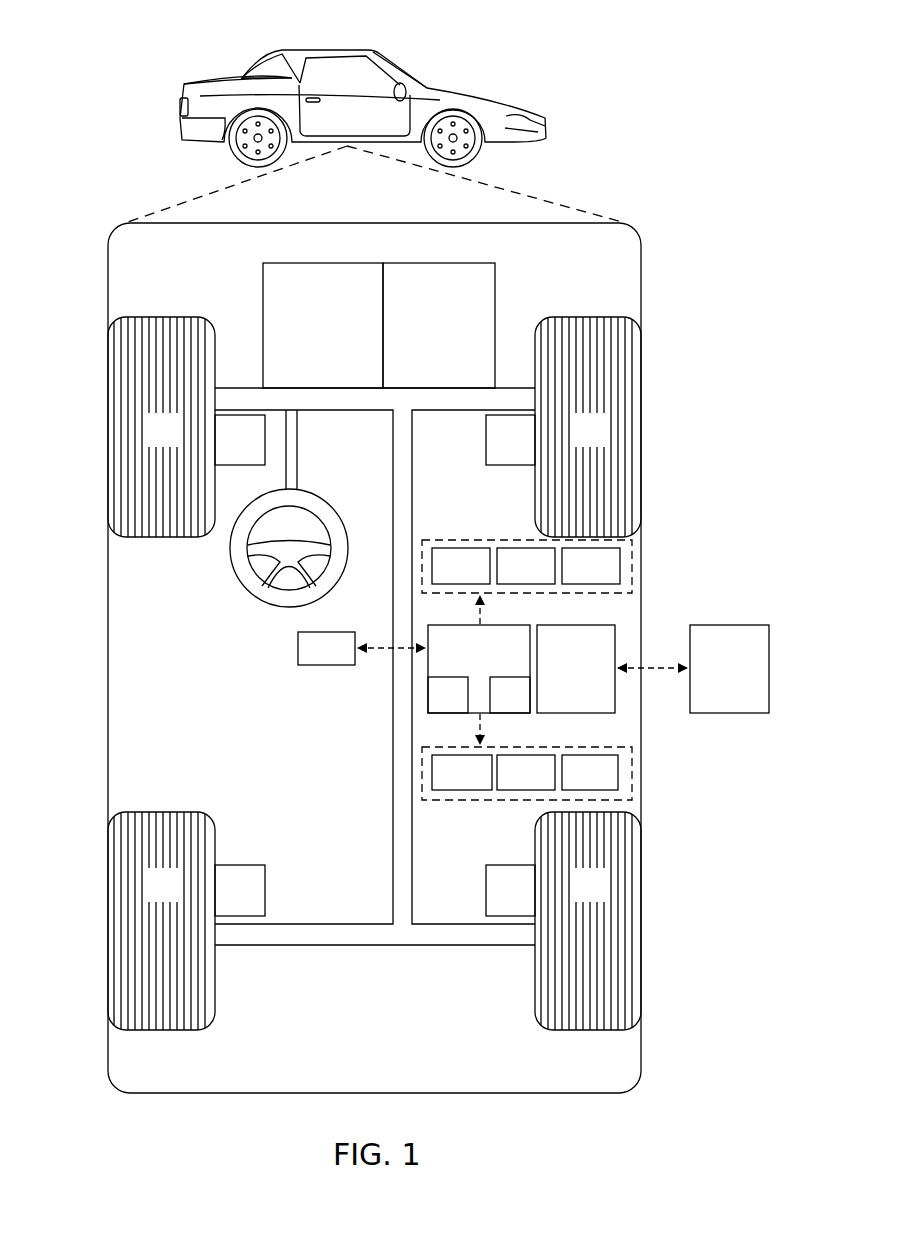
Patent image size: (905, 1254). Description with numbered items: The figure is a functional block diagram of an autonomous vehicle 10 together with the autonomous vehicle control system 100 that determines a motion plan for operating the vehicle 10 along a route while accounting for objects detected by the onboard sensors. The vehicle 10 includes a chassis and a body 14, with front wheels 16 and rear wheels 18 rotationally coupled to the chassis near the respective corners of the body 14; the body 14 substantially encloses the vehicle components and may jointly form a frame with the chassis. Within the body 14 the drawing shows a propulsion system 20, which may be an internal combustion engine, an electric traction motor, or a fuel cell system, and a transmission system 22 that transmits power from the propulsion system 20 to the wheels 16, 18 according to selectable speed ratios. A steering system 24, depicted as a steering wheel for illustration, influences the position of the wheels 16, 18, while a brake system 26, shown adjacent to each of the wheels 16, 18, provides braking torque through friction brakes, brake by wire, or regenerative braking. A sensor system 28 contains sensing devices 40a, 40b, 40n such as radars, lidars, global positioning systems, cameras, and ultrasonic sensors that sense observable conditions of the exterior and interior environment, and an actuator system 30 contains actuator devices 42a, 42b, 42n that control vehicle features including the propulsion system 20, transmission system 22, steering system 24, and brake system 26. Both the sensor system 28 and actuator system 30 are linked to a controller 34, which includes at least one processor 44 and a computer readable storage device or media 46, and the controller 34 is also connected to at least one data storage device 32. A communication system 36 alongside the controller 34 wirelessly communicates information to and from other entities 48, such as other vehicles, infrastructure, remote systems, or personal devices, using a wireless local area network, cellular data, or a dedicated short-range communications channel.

The autonomous vehicle 10 is at (180, 104).
The autonomous vehicle control system 100 is at (668, 216).
The body 14 is at (108, 668).
The front wheels 16 is at (174, 442).
The rear wheels 18 is at (174, 897).
The propulsion system 20 is at (336, 341).
The transmission system 22 is at (453, 341).
The steering system 24 is at (313, 432).
The brake system 26 is at (253, 452).
The sensor system 28 is at (470, 540).
The actuator system 30 is at (470, 800).
The data storage device 32 is at (340, 660).
The controller 34 is at (492, 656).
The communication system 36 is at (589, 680).
The sensing device 40a is at (480, 578).
The sensing device 40b is at (545, 578).
The sensing device 40n is at (610, 578).
The actuator device 42a is at (481, 785).
The actuator device 42b is at (545, 785).
The actuator device 42n is at (609, 785).
The processor 44 is at (461, 707).
The computer readable storage device or media 46 is at (523, 707).
The other entities 48 is at (742, 680).